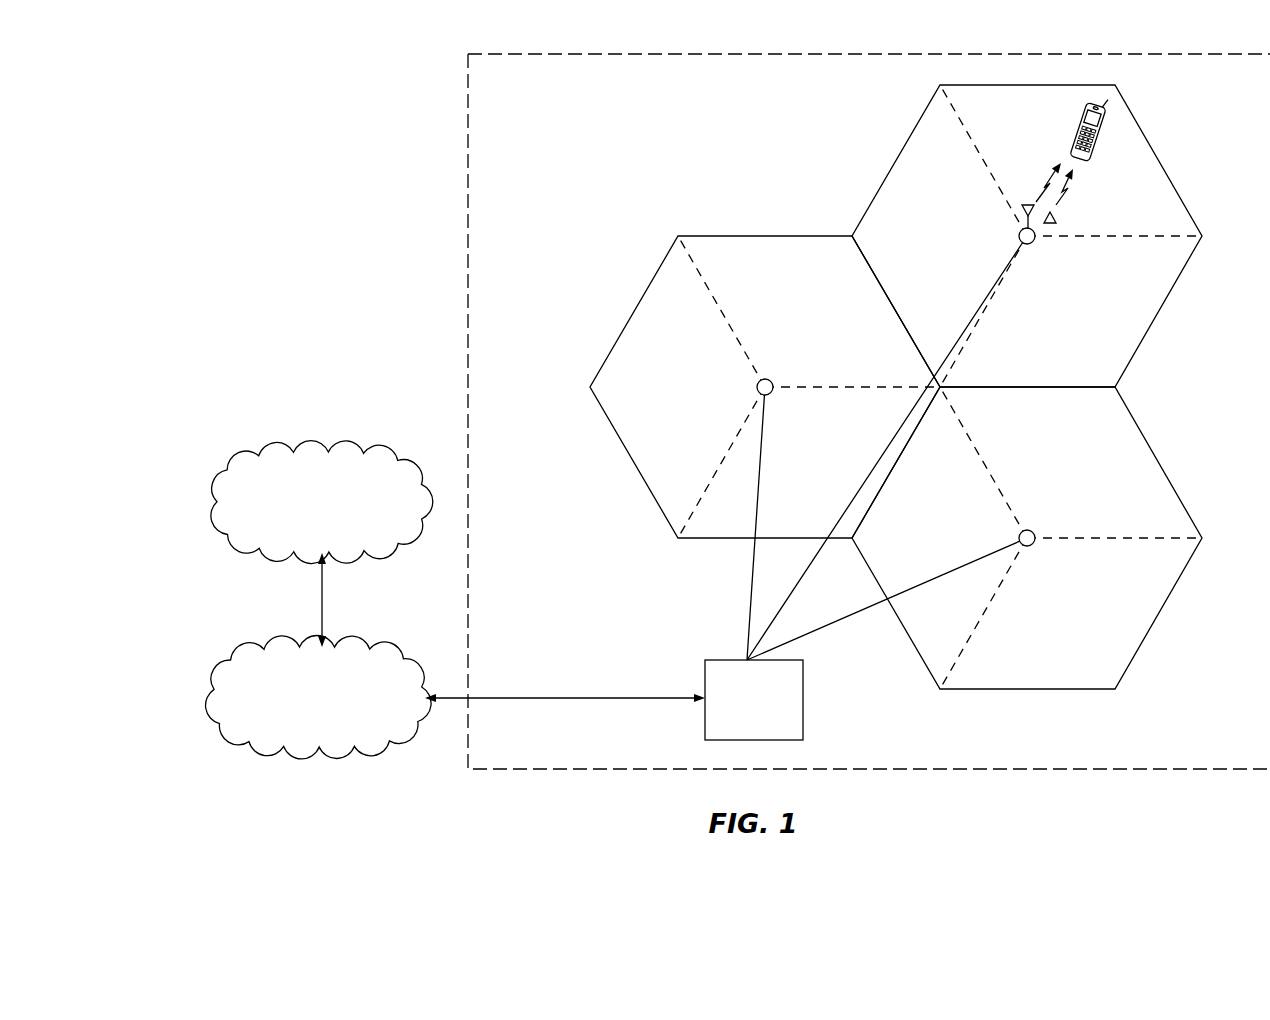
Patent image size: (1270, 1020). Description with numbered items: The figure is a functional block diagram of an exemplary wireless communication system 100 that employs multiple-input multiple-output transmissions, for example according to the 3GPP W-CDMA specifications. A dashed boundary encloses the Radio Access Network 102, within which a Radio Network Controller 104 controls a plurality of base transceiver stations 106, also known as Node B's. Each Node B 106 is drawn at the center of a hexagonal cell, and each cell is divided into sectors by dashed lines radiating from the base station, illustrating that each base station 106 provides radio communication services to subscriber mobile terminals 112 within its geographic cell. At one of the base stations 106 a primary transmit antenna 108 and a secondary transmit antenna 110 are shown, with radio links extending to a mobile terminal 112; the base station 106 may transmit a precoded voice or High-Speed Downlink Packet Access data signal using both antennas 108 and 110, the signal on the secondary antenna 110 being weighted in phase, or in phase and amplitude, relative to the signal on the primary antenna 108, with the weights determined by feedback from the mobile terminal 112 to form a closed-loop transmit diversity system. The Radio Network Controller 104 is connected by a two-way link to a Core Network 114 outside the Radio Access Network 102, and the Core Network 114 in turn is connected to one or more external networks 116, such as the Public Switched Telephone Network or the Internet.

The wireless communication system 100 is at (335, 222).
The Radio Access Network 102 is at (495, 753).
The Radio Network Controller 104 is at (737, 720).
The base transceiver station 106 is at (1034, 244).
The primary transmit antenna 108 is at (1029, 204).
The secondary transmit antenna 110 is at (1057, 220).
The subscriber mobile terminal 112 is at (1081, 162).
The Core Network 114 is at (303, 718).
The external network 116 is at (306, 540).